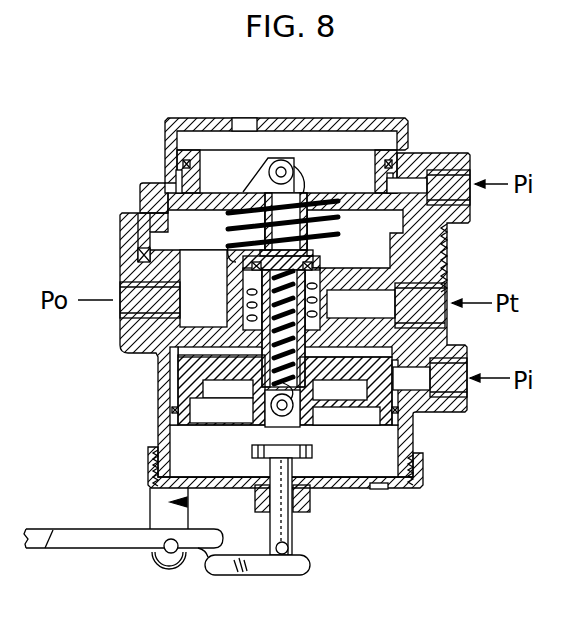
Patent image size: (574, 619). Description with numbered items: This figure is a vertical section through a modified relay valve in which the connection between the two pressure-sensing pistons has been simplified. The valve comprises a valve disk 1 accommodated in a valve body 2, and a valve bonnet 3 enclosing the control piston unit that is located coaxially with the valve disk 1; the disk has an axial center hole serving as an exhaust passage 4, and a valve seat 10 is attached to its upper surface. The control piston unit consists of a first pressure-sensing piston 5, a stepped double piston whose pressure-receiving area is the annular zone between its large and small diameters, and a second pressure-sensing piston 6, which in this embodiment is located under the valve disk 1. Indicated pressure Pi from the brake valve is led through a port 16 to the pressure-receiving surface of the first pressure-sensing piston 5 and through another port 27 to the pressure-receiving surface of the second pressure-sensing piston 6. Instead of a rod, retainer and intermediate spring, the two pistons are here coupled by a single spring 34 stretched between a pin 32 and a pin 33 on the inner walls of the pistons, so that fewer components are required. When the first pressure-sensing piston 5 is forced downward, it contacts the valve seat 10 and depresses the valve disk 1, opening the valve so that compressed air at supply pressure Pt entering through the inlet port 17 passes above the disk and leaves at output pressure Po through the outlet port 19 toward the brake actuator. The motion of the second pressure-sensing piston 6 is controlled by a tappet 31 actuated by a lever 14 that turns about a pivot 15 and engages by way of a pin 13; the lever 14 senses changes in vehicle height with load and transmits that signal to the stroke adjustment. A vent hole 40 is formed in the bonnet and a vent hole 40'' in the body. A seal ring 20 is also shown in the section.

The valve disk 1 is at (255, 357).
The valve body 2 is at (422, 455).
The valve bonnet 3 is at (165, 131).
The exhaust passage 4 is at (257, 362).
The first pressure-sensing piston 5 is at (392, 157).
The second pressure-sensing piston 6 is at (178, 414).
The valve seat 10 is at (322, 276).
The pin 13 is at (293, 548).
The lever 14 is at (65, 538).
The pivot 15 is at (165, 548).
The port 16 is at (466, 178).
The inlet port 17 is at (452, 290).
The outlet port 19 is at (127, 291).
The seal ring 20 is at (157, 208).
The port 27 is at (465, 370).
The tappet 31 is at (283, 527).
The pin 32 is at (289, 163).
The pin 33 is at (312, 428).
The spring 34 is at (303, 203).
The vent hole 40 is at (236, 101).
The vent hole 40'' is at (409, 514).